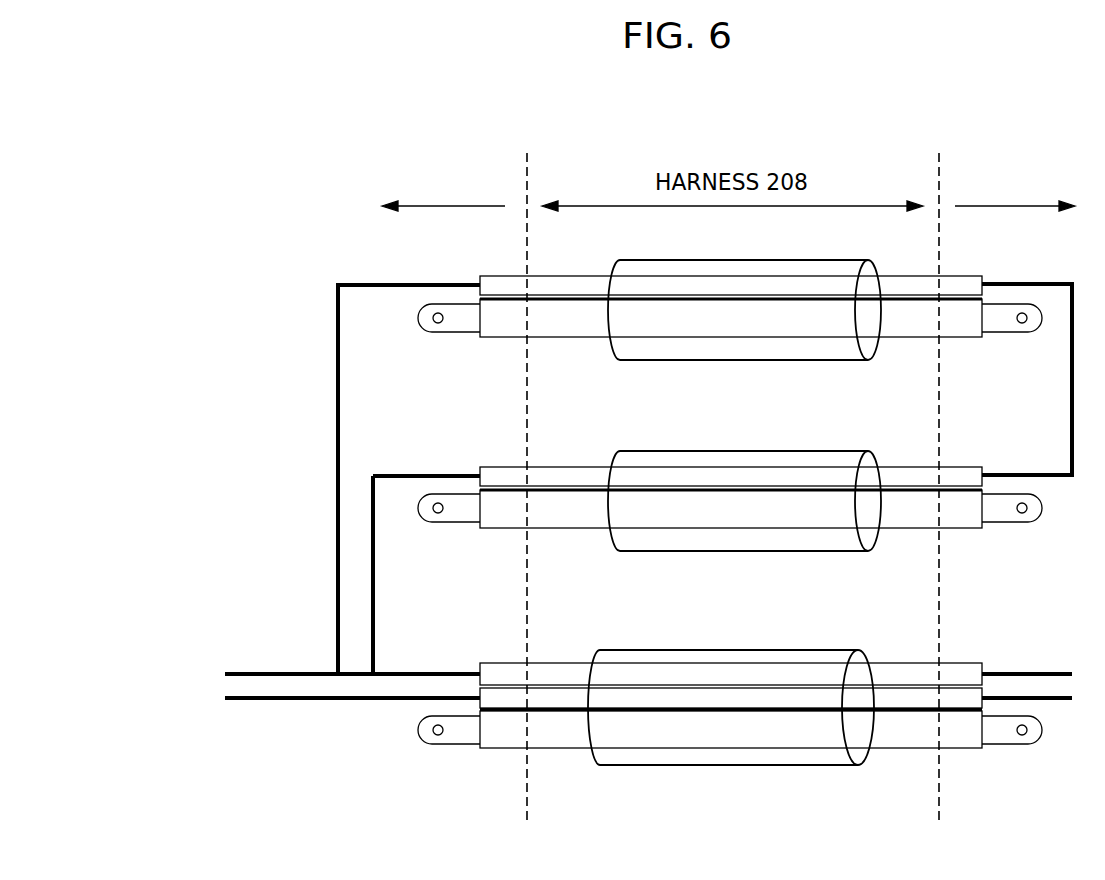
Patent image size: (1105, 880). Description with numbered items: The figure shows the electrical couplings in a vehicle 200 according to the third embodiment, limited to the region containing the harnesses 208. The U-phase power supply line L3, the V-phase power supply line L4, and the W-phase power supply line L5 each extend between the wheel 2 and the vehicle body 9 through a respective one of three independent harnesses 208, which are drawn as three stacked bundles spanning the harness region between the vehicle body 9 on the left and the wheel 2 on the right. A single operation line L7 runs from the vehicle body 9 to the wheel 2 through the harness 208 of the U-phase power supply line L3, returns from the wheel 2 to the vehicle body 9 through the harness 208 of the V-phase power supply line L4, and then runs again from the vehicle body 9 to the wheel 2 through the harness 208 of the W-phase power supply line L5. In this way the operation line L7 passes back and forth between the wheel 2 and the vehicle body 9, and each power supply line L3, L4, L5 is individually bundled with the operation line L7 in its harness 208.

The vehicle 200 is at (287, 153).
The harness 208 is at (753, 360).
The vehicle body 9 is at (410, 190).
The wheel 2 is at (1015, 190).
The U-phase power supply line L3 is at (965, 337).
The V-phase power supply line L4 is at (965, 527).
The W-phase power supply line L5 is at (965, 748).
The operation line L7 is at (337, 603).